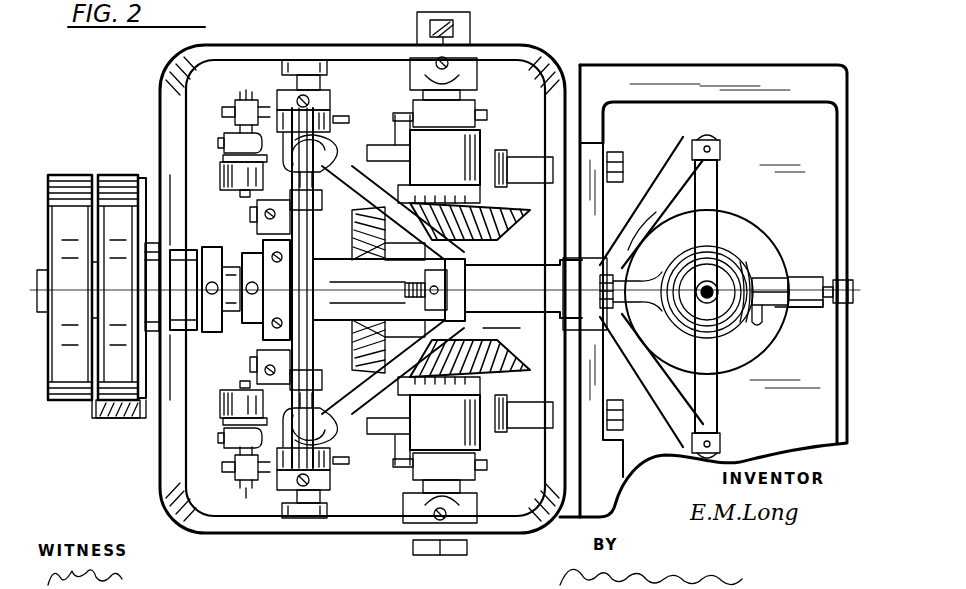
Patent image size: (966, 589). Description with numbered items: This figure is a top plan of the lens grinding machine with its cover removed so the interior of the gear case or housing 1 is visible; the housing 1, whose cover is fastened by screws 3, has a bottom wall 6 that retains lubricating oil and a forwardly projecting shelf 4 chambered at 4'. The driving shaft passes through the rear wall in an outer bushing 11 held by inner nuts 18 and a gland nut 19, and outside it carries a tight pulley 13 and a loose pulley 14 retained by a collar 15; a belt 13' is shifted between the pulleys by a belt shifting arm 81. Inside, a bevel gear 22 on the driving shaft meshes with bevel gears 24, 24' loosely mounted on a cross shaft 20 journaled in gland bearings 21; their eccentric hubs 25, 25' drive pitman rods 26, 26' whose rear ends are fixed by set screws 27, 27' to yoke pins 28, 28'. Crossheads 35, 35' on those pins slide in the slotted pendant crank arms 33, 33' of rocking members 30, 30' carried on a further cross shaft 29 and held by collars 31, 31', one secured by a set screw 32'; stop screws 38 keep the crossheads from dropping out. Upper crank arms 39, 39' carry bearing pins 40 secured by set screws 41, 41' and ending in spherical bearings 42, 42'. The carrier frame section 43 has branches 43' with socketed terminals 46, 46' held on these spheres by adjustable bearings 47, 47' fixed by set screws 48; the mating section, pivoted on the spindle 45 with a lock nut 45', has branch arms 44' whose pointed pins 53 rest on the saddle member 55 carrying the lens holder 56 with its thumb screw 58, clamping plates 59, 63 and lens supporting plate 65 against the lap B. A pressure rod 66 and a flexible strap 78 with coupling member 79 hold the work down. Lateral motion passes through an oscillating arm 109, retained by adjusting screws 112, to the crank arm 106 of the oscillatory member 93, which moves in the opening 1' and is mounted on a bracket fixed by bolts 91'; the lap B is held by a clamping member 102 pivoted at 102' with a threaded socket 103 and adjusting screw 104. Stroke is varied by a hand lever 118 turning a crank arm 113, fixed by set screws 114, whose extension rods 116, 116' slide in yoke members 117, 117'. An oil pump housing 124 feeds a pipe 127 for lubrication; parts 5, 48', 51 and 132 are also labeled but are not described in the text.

The gear case or housing 1 is at (354, 289).
The opening in front wall of housing 1' is at (524, 291).
The screws 3 is at (450, 60).
The shelf 4 is at (703, 278).
The chambered upper side of shelf 4' is at (713, 257).
The shaft 5 is at (822, 280).
The bottom wall 6 is at (195, 447).
The outer bushing 11 is at (244, 327).
The tight pulley 13 is at (119, 274).
The belt 13' is at (118, 275).
The loose pulley 14 is at (70, 175).
The collar 15 is at (42, 270).
The inner nuts 18 is at (204, 283).
The gland nut 19 is at (145, 274).
The cross shaft 20 is at (462, 94).
The gland bearings 21 is at (420, 44).
The bevel gear 22 is at (368, 246).
The bevel gear 24 is at (470, 367).
The bevel gear 24' is at (470, 213).
The hub 25 is at (439, 413).
The hub 25' is at (439, 166).
The pitman rod 26 is at (388, 417).
The pitman rod 26' is at (388, 160).
The set screw 27 is at (229, 438).
The set screw 27' is at (228, 140).
The yoke pin 28 is at (252, 496).
The yoke pin 28' is at (236, 86).
The cross shaft 29 is at (367, 304).
The rocking member 30 is at (320, 380).
The rocking member 30' is at (321, 200).
The collar 31 is at (312, 486).
The collar 31' is at (318, 92).
The set screw 32' is at (304, 67).
The pendant crank arm 33 is at (229, 402).
The pendant crank arm 33' is at (228, 176).
The crosshead 35 is at (231, 418).
The crosshead 35' is at (230, 155).
The stop screw 38 is at (240, 195).
The crank arm 39 is at (393, 367).
The crank arm 39' is at (393, 213).
The bearing pin 40 is at (302, 288).
The set screw 41 is at (248, 404).
The set screw 41' is at (248, 177).
The spherical bearing 42 is at (315, 420).
The spherical bearing 42' is at (316, 160).
The Y-shaped section 43 is at (526, 294).
The branches 43' is at (388, 290).
The branch arms 44' is at (651, 292).
The pivotal bolt 45 is at (515, 302).
The lock nut 45' is at (614, 301).
The socketed terminal 46 is at (303, 459).
The socketed terminal 46' is at (303, 121).
The adjustable bearing 47 is at (391, 451).
The adjustable bearing 47' is at (390, 129).
The set screws 48 is at (354, 481).
The nut 48' is at (355, 101).
The nut 51 is at (425, 306).
The pointed pins 53 is at (712, 149).
The saddle member 55 is at (718, 196).
The lens holder 56 is at (682, 312).
The thumb screw 58 is at (762, 312).
The clamping plate 59 is at (748, 278).
The clamping plate 63 is at (685, 270).
The lens supporting plate 65 is at (775, 280).
The pressure rod 66 is at (630, 290).
The flexible strap 78 is at (707, 303).
The coupling member 79 is at (707, 283).
The belt shifting arm 81 is at (118, 420).
The bolts 91' is at (630, 292).
The oscillatory member 93 is at (742, 235).
The movable clamping member 102 is at (806, 309).
The pivot 102' is at (797, 333).
The threaded socket 103 is at (812, 307).
The adjusting screw 104 is at (840, 280).
The crank arm 106 is at (645, 245).
The oscillating arm 109 is at (423, 308).
The adjusting screw 112 is at (250, 216).
The crank arm 113 is at (394, 112).
The set screws 114 is at (487, 115).
The extension rod 116 is at (231, 465).
The extension rod 116' is at (231, 109).
The yoke member 117 is at (225, 469).
The yoke member 117' is at (227, 107).
The hand lever 118 is at (430, 25).
The pump housing 124 is at (266, 325).
The pipe 127 is at (263, 245).
The cap 132 is at (304, 510).
The lap B is at (740, 262).